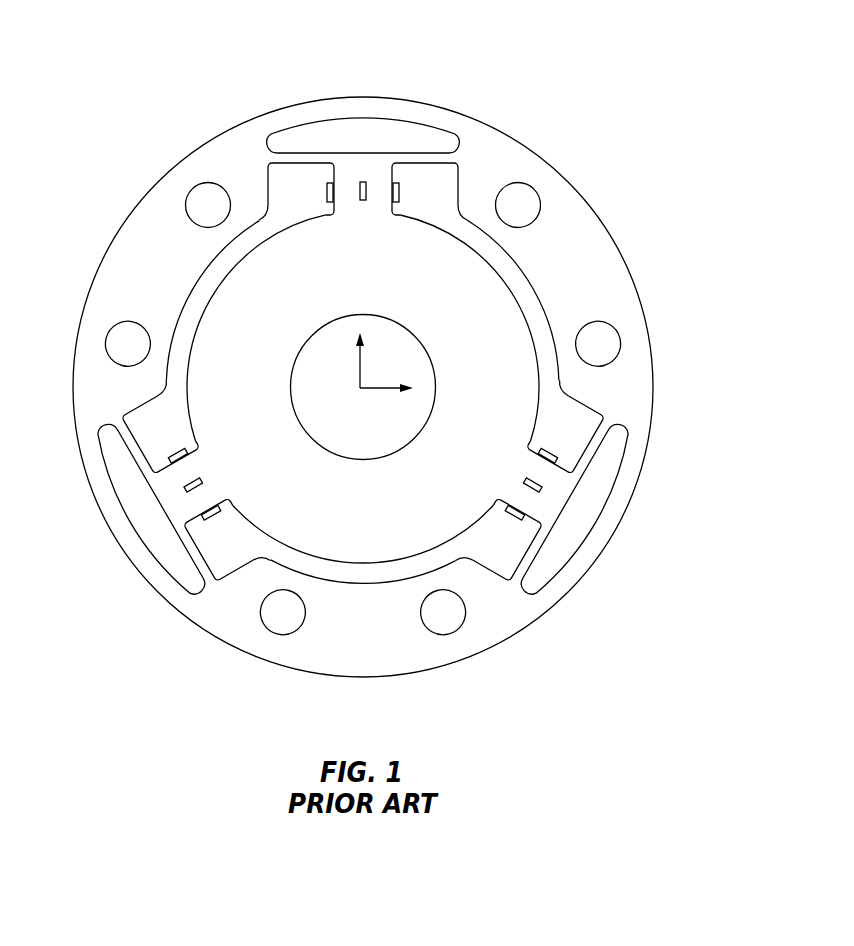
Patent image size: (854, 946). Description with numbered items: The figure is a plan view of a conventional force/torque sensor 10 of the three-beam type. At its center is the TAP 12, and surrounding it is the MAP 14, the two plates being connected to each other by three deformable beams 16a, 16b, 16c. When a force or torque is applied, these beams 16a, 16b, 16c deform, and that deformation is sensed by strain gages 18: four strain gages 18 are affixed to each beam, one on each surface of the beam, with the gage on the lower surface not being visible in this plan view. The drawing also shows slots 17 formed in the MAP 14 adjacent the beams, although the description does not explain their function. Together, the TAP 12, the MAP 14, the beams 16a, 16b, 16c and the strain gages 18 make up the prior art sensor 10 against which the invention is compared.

The force/torque sensor 10 is at (172, 68).
The TAP 12 is at (437, 487).
The MAP 14 is at (584, 278).
The deformable beam 16a is at (378, 175).
The deformable beam 16b is at (537, 507).
The deformable beam 16c is at (185, 473).
The arcuate slot 17 is at (304, 162).
The strain gage 18 is at (393, 205).